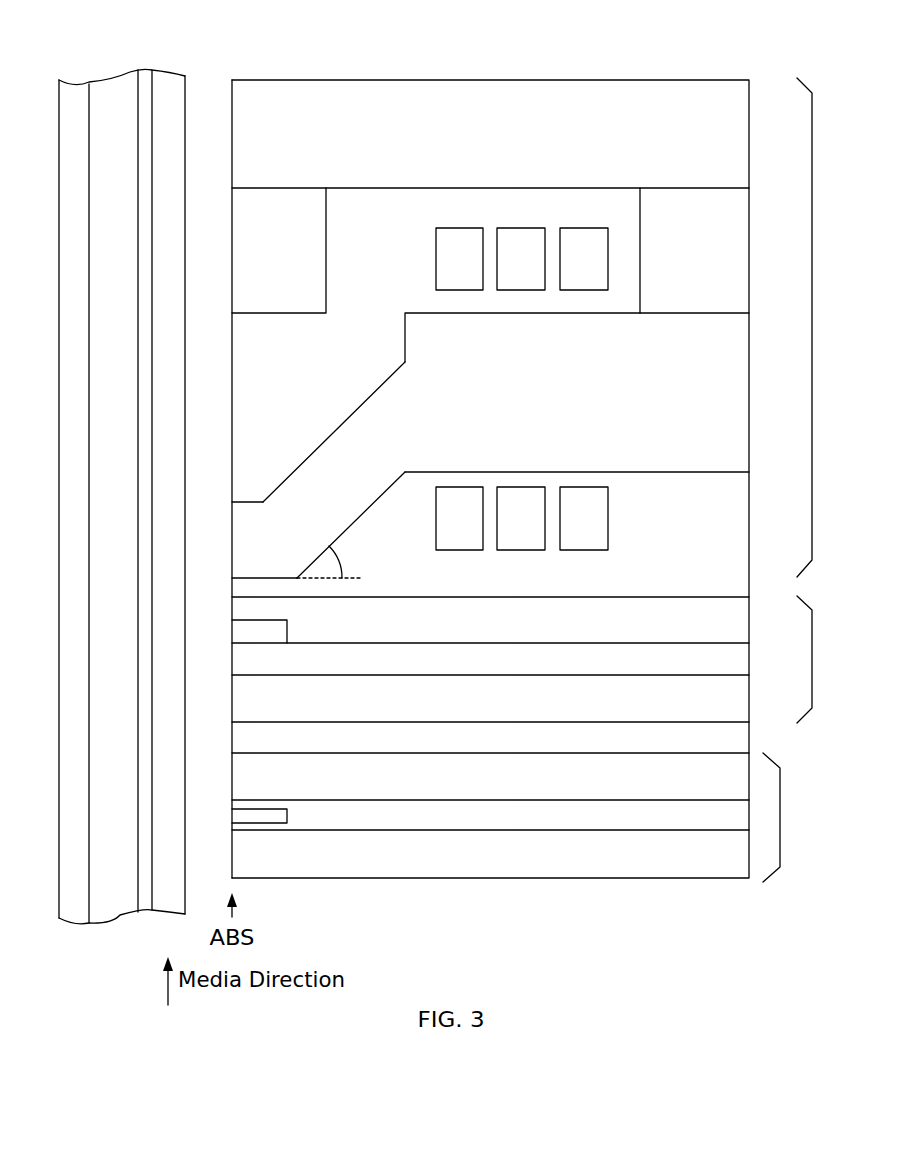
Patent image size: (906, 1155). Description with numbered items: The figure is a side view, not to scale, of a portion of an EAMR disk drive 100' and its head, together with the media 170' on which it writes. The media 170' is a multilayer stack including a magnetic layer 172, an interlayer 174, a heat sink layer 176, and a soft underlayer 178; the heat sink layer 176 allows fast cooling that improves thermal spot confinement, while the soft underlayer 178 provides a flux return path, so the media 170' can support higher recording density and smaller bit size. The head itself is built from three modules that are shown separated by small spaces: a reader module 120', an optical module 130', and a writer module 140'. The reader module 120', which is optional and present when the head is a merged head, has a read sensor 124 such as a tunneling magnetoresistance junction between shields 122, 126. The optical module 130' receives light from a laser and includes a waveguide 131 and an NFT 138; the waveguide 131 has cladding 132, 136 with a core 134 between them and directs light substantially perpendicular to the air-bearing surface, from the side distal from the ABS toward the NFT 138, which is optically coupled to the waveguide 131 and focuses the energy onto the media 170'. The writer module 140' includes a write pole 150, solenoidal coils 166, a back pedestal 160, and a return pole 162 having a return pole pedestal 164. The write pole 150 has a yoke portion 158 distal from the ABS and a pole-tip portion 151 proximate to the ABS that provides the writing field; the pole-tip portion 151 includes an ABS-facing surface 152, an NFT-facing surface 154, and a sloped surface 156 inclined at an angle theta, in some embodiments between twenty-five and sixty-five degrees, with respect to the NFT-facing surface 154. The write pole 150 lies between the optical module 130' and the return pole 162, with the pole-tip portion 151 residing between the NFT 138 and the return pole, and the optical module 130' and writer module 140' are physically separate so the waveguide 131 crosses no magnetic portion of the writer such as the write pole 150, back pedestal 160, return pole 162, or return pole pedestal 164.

The EAMR disk drive 100' is at (490, 448).
The reader module 120' is at (806, 817).
The shield 122 is at (370, 878).
The read sensor 124 is at (267, 823).
The shield 126 is at (640, 800).
The optical module 130' is at (827, 659).
The waveguide 131 is at (208, 672).
The cladding 132 is at (749, 722).
The core 134 is at (749, 660).
The cladding 136 is at (749, 612).
The NFT 138 is at (287, 633).
The writer module 140' is at (827, 327).
The write pole 150 is at (750, 408).
The pole-tip portion 151 is at (336, 366).
The ABS-facing surface 152 is at (215, 536).
The NFT-facing surface 154 is at (273, 552).
The sloped surface 156 is at (382, 525).
The yoke portion 158 is at (699, 489).
The back pedestal 160 is at (750, 250).
The return pole 162 is at (750, 172).
The return pole pedestal 164 is at (231, 267).
The coils 166 is at (640, 517).
The media 170' is at (119, 533).
The magnetic layer 172 is at (187, 757).
The interlayer 174 is at (146, 72).
The heat sink layer 176 is at (105, 923).
The soft underlayer 178 is at (72, 82).